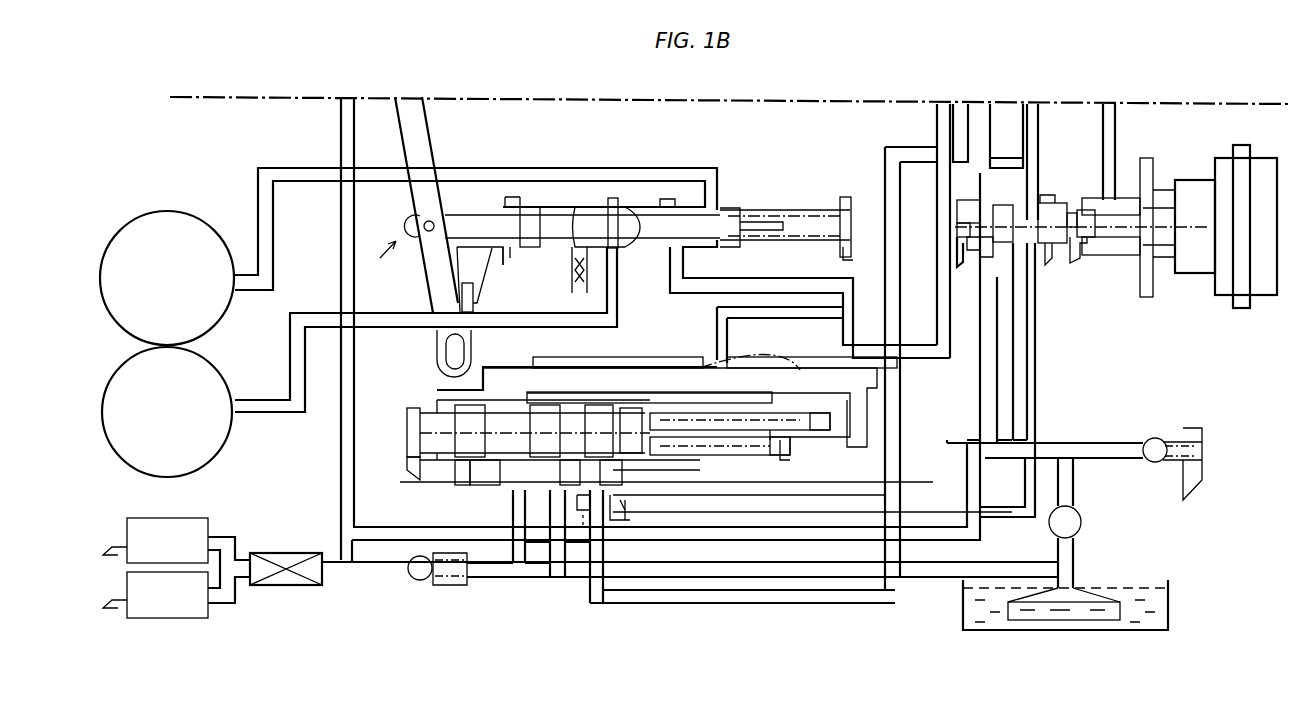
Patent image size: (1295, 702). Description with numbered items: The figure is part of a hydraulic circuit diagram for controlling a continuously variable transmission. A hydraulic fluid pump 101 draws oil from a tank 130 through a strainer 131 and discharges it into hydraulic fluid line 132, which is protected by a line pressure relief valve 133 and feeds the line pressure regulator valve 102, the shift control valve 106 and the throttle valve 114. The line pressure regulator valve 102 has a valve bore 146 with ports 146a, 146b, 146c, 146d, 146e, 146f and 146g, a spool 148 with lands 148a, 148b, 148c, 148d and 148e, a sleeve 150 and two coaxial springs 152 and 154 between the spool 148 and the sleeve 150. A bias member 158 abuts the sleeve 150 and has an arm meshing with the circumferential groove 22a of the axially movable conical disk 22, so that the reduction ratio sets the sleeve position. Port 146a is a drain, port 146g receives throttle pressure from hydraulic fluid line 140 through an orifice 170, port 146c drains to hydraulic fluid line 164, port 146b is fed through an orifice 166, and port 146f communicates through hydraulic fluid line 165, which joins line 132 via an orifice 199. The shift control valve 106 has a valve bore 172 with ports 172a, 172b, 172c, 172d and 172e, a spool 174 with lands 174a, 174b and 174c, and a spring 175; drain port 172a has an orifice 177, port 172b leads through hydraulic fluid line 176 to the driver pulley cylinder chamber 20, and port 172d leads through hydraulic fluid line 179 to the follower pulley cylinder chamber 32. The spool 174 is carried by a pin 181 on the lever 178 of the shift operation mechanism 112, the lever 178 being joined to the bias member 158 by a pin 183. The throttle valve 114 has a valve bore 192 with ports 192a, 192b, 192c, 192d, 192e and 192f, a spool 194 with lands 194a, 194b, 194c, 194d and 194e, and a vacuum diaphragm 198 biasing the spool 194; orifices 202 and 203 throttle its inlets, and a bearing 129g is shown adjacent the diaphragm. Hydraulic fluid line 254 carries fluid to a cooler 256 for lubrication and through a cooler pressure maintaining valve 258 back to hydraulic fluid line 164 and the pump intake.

The driver pulley cylinder chamber 20 is at (223, 446).
The axially movable conical disk 22 is at (492, 263).
The circumferential groove 22a is at (476, 290).
The follower pulley cylinder chamber 32 is at (220, 316).
The hydraulic fluid pump 101 is at (1090, 500).
The line pressure regulator valve 102 is at (407, 501).
The shift control valve 106 is at (730, 168).
The shift operation mechanism 112 is at (378, 262).
The throttle valve 114 is at (1109, 328).
The bearing 129g is at (1110, 245).
The tank 130 is at (1172, 594).
The strainer 131 is at (1085, 592).
The hydraulic fluid line 132 is at (1074, 440).
The line pressure relief valve 133 is at (1157, 438).
The hydraulic fluid line 140 is at (1010, 520).
The valve bore 146 is at (470, 450).
The port 146a is at (410, 460).
The port 146b is at (470, 485).
The port 146c is at (510, 405).
The port 146d is at (500, 590).
The port 146e is at (575, 540).
The port 146f is at (608, 505).
The port 146g is at (632, 410).
The spool 148 is at (435, 448).
The land 148a is at (455, 475).
The land 148b is at (415, 425).
The land 148c is at (550, 405).
The land 148d is at (605, 410).
The land 148e is at (630, 462).
The sleeve 150 is at (812, 435).
The spring 152 is at (770, 350).
The spring 154 is at (795, 440).
The bias member 158 is at (877, 385).
The hydraulic fluid line 164 is at (525, 570).
The hydraulic fluid line 165 is at (640, 605).
The orifice 166 is at (500, 495).
The orifice 170 is at (630, 485).
The valve bore 172 is at (784, 212).
The port 172a is at (533, 261).
The port 172b is at (620, 250).
The port 172c is at (660, 272).
The port 172d is at (712, 256).
The port 172e is at (850, 252).
The spool 174 is at (464, 222).
The land 174a is at (528, 222).
The land 174b is at (638, 222).
The land 174c is at (726, 215).
The spring 175 is at (832, 208).
The hydraulic fluid line 176 is at (325, 330).
The orifice 177 is at (585, 281).
The lever 178 is at (410, 136).
The hydraulic fluid line 179 is at (300, 183).
The pin 181 is at (420, 222).
The pin 183 is at (434, 365).
The valve bore 192 is at (1030, 210).
The port 192a is at (965, 240).
The port 192b is at (980, 250).
The port 192c is at (1000, 275).
The port 192d is at (1030, 280).
The port 192e is at (1047, 262).
The port 192f is at (1080, 265).
The spool 194 is at (958, 236).
The land 194a is at (968, 210).
The land 194b is at (960, 218).
The land 194c is at (1052, 213).
The land 194d is at (1088, 212).
The land 194e is at (1147, 192).
The vacuum diaphragm 198 is at (1247, 149).
The orifice 199 is at (585, 530).
The orifice 202 is at (990, 166).
The orifice 203 is at (1118, 140).
The hydraulic fluid line 254 is at (340, 245).
The cooler 256 is at (290, 552).
The cooler pressure maintaining valve 258 is at (412, 578).